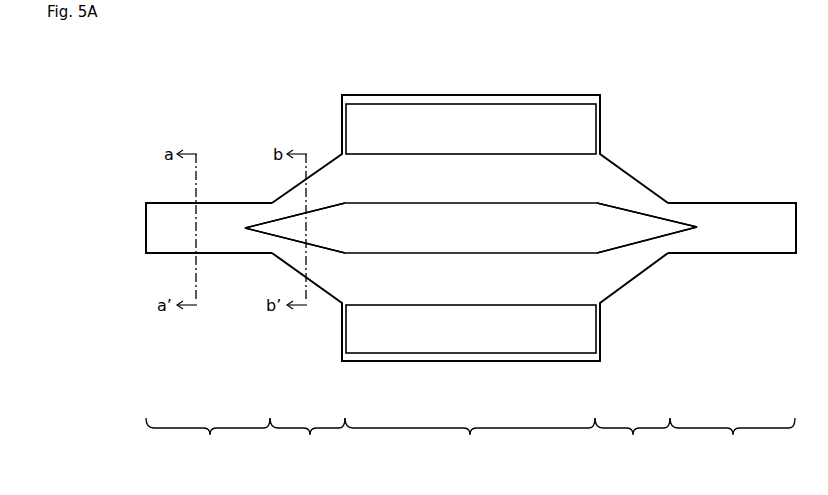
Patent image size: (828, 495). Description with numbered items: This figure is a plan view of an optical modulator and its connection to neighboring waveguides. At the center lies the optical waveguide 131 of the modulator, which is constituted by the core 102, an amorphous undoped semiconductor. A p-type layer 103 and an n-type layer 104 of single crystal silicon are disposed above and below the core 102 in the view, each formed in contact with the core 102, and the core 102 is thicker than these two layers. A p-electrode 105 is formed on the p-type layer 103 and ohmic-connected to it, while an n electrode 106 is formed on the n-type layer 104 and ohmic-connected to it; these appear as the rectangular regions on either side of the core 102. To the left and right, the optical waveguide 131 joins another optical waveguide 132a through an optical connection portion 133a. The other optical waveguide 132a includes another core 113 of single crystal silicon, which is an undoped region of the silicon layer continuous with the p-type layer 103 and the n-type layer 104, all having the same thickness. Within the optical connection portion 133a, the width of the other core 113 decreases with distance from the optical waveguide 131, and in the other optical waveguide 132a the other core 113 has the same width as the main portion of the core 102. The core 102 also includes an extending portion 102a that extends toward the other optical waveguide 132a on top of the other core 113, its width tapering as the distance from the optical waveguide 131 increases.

The core 102 is at (392, 240).
The extending portion 102a is at (280, 230).
The p-type layer 103 is at (535, 177).
The n-type layer 104 is at (535, 280).
The p-electrode 105 is at (590, 123).
The n electrode 106 is at (590, 335).
The other core 113 is at (221, 203).
The optical waveguide 131 is at (470, 440).
The other optical waveguide 132a is at (470, 440).
The optical connection portion 133a is at (470, 440).